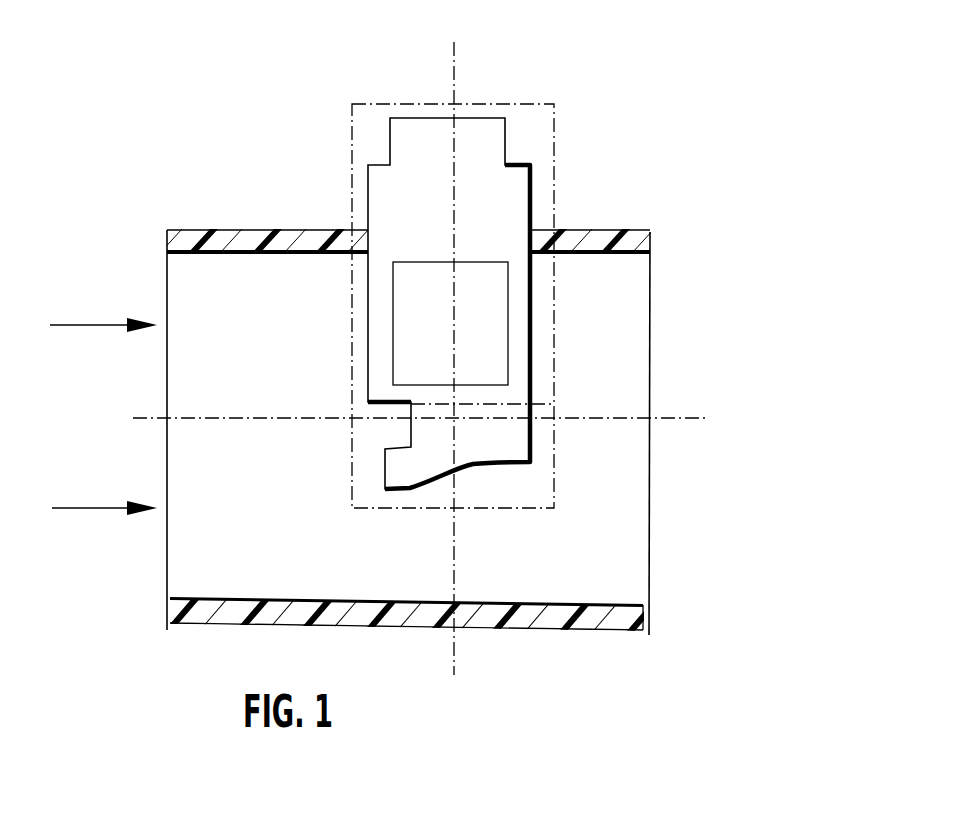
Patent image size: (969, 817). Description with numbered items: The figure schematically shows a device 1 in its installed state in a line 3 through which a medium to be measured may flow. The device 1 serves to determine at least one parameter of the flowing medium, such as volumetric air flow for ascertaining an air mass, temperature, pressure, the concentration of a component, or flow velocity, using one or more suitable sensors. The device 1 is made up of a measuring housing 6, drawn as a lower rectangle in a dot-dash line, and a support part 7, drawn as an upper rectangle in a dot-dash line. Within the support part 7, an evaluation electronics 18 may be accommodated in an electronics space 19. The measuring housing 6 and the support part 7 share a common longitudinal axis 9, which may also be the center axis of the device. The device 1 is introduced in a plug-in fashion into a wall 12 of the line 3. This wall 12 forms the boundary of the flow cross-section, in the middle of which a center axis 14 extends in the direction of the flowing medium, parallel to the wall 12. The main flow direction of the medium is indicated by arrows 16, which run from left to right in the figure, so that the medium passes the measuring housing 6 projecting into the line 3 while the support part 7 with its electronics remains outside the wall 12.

The device 1 is at (652, 140).
The line 3 is at (243, 275).
The measuring housing 6 is at (537, 485).
The support part 7 is at (547, 325).
The longitudinal axis 9 is at (455, 73).
The wall 12 is at (588, 619).
The center axis 14 is at (663, 422).
The arrows 16 is at (80, 325).
The evaluation electronics 18 is at (426, 280).
The electronics space 19 is at (531, 383).